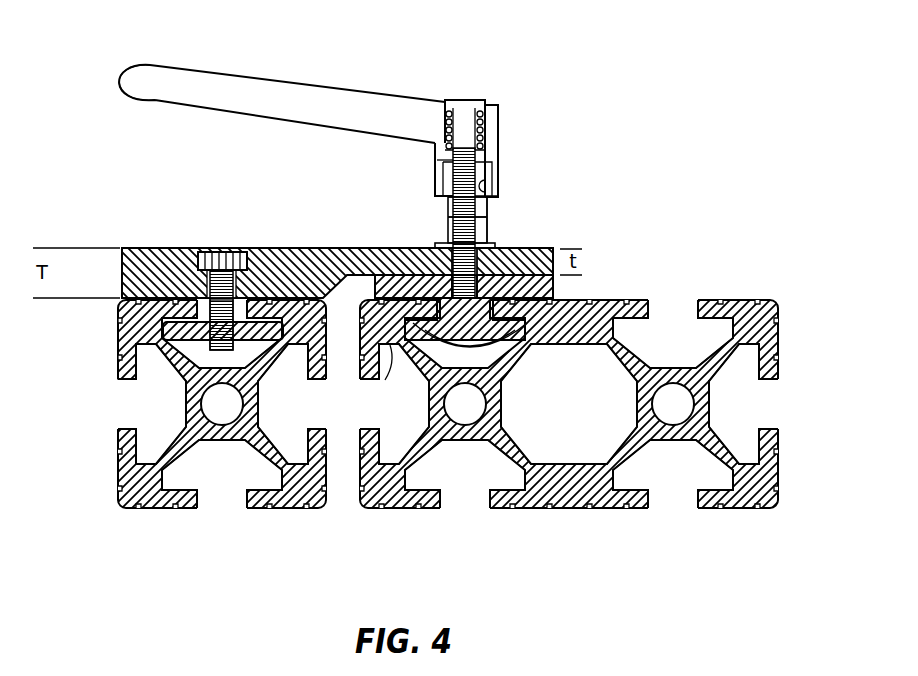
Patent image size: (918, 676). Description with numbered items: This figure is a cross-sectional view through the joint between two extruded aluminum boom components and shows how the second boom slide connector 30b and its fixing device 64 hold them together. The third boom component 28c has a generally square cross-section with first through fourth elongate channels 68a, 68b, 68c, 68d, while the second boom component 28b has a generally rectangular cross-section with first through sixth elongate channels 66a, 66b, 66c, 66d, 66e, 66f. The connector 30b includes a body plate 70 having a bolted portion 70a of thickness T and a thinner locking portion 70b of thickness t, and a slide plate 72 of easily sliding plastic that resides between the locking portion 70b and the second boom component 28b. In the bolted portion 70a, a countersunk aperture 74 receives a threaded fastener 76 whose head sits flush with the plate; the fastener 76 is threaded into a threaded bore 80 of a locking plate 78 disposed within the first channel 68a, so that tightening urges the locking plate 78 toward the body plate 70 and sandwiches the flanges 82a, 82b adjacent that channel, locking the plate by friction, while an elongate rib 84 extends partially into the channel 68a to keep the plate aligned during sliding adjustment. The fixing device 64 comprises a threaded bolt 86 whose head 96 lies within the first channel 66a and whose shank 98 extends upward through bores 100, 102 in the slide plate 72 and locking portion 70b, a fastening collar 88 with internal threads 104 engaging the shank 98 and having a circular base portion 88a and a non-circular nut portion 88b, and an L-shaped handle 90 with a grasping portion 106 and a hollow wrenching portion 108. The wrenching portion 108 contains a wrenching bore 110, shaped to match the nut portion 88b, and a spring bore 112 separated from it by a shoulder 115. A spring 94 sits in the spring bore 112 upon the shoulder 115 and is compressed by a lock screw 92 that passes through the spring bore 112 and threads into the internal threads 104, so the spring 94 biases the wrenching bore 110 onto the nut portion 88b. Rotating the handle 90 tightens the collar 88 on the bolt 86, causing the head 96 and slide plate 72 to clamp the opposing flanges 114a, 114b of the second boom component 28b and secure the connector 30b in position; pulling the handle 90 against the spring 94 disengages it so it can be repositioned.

The second boom component 28b is at (785, 499).
The third boom component 28c is at (110, 499).
The second boom slide connector 30b is at (135, 242).
The fixing device 64 is at (371, 210).
The first elongate channel 66a is at (485, 380).
The second elongate channel 66b is at (650, 327).
The third elongate channel 66c is at (755, 348).
The fourth elongate channel 66d is at (712, 483).
The fifth elongate channel 66e is at (427, 481).
The sixth elongate channel 66f is at (383, 448).
The first elongate channel 68a is at (185, 382).
The second elongate channel 68b is at (302, 447).
The third elongate channel 68c is at (168, 487).
The fourth elongate channel 68d is at (140, 447).
The body plate 70 is at (305, 262).
The bolted portion 70a is at (160, 262).
The locking portion 70b is at (550, 246).
The slide plate 72 is at (547, 283).
The aperture 74 is at (258, 322).
The threaded fastener 76 is at (220, 260).
The locking plate 78 is at (120, 348).
The threaded bore 80 is at (232, 340).
The flange 82a is at (120, 326).
The flange 82b is at (265, 298).
The elongate rib 84 is at (260, 357).
The threaded bolt 86 is at (508, 350).
The fastening collar 88 is at (483, 215).
The base portion 88a is at (480, 213).
The nut portion 88b is at (487, 168).
The handle 90 is at (322, 92).
The lock screw 92 is at (460, 103).
The spring 94 is at (493, 132).
The head 96 is at (423, 320).
The shank 98 is at (465, 233).
The bore 100 is at (448, 250).
The bore 102 is at (490, 236).
The internal threads 104 is at (473, 208).
The grasping portion 106 is at (173, 78).
The wrenching portion 108 is at (492, 146).
The wrenching bore 110 is at (483, 202).
The spring bore 112 is at (460, 120).
The flange 114a is at (393, 377).
The flange 114b is at (515, 328).
The shoulder 115 is at (447, 160).